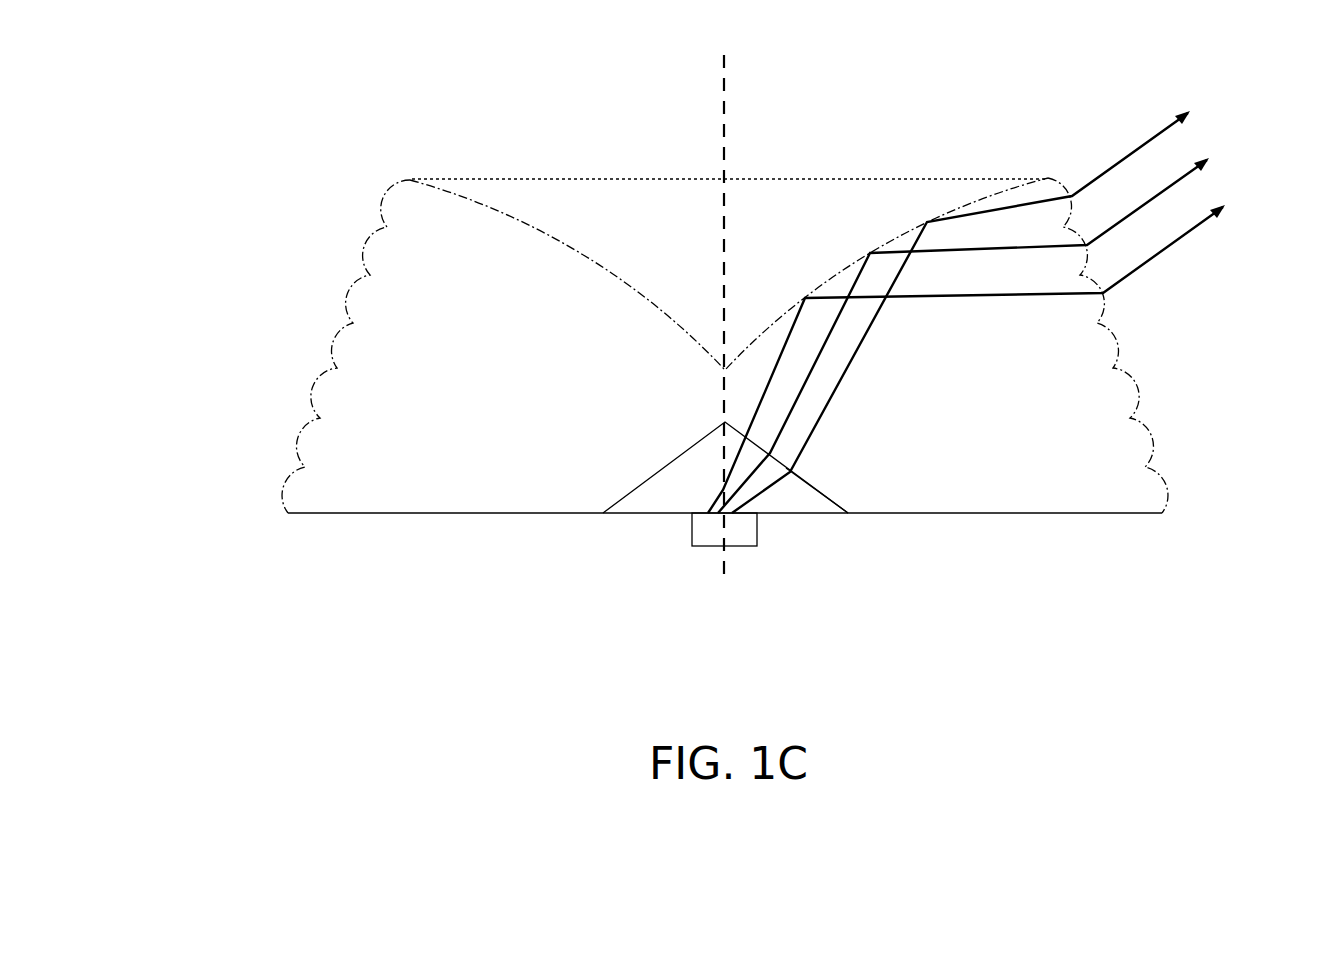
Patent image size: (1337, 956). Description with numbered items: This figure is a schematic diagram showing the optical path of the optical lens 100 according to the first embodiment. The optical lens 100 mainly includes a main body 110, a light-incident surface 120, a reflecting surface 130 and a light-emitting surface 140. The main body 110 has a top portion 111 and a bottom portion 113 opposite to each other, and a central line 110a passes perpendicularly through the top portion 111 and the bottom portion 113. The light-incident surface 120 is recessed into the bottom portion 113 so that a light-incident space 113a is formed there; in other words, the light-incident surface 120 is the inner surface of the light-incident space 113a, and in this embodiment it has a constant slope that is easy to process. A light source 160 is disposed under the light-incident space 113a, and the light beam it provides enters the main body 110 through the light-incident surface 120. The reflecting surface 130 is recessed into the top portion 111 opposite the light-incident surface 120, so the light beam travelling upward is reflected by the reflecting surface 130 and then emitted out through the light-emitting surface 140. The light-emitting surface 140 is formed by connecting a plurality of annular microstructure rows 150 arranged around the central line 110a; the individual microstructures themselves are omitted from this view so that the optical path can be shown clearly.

The optical lens 100 is at (224, 100).
The main body 110 is at (1100, 394).
The central line 110a is at (727, 63).
The top portion 111 is at (410, 175).
The bottom portion 113 is at (324, 526).
The light-incident space 113a is at (788, 498).
The light-incident surface 120 is at (640, 488).
The reflecting surface 130 is at (535, 237).
The light-emitting surface 140 is at (1160, 439).
The microstructure rows 150 is at (297, 323).
The light source 160 is at (745, 533).